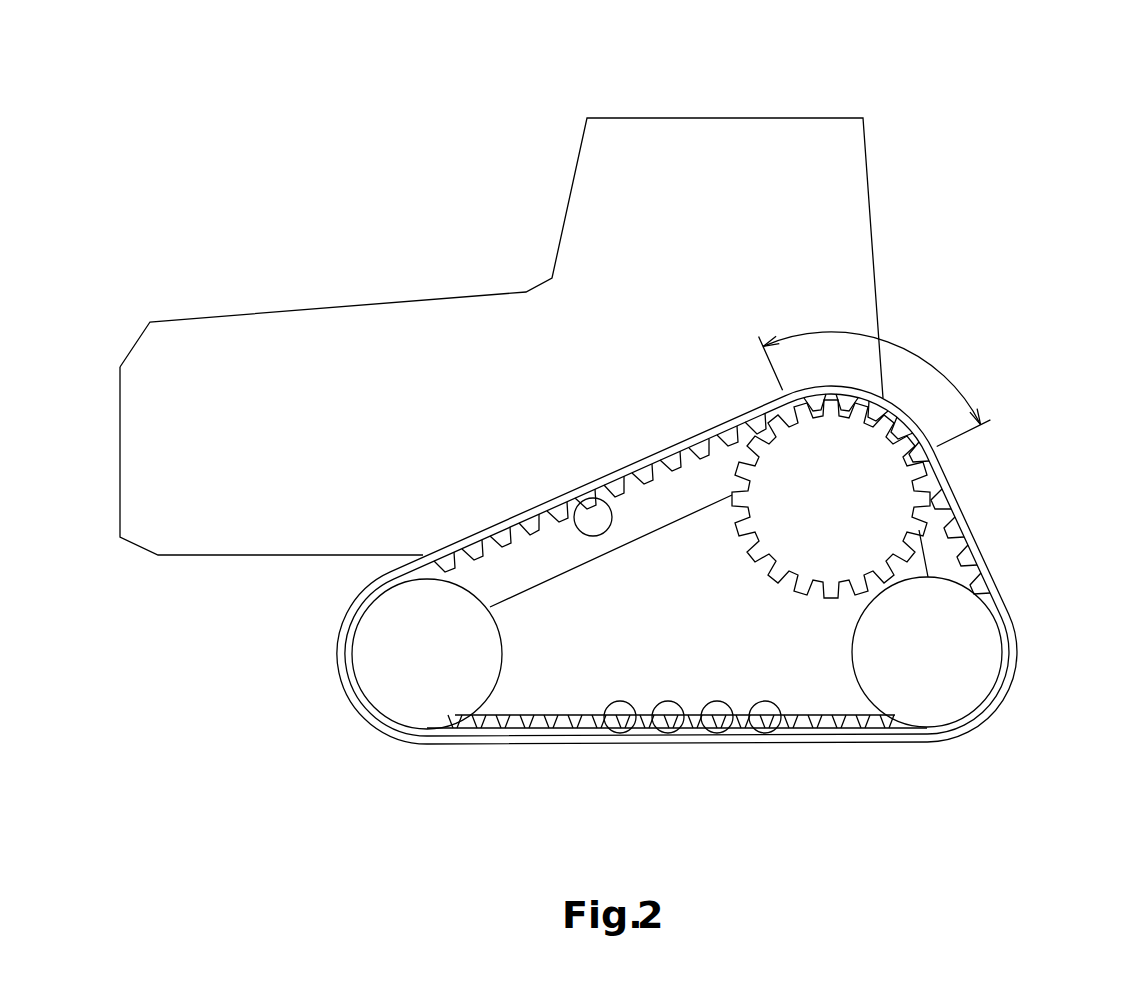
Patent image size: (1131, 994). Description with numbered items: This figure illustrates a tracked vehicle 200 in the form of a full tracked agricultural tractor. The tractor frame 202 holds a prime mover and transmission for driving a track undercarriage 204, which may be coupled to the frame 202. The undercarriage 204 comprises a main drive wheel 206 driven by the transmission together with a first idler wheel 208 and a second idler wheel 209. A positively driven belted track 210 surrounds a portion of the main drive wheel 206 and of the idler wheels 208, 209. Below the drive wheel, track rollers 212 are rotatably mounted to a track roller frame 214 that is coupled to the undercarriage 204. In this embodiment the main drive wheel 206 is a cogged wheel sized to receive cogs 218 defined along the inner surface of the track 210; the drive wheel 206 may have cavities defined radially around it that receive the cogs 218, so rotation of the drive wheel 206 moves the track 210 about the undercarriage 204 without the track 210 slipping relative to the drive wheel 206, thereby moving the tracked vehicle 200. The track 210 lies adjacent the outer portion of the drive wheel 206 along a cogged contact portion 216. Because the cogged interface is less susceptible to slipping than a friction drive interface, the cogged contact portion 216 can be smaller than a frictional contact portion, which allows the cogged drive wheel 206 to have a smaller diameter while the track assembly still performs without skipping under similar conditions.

The tracked vehicle 200 is at (362, 137).
The tractor frame 202 is at (232, 523).
The track undercarriage 204 is at (730, 565).
The main drive wheel 206 is at (856, 511).
The first idler wheel 208 is at (948, 666).
The second idler wheel 209 is at (445, 676).
The positively driven belted track 210 is at (993, 588).
The track rollers 212 is at (620, 722).
The track roller frame 214 is at (548, 683).
The cogged contact portion 216 is at (899, 346).
The cogs 218 is at (606, 503).